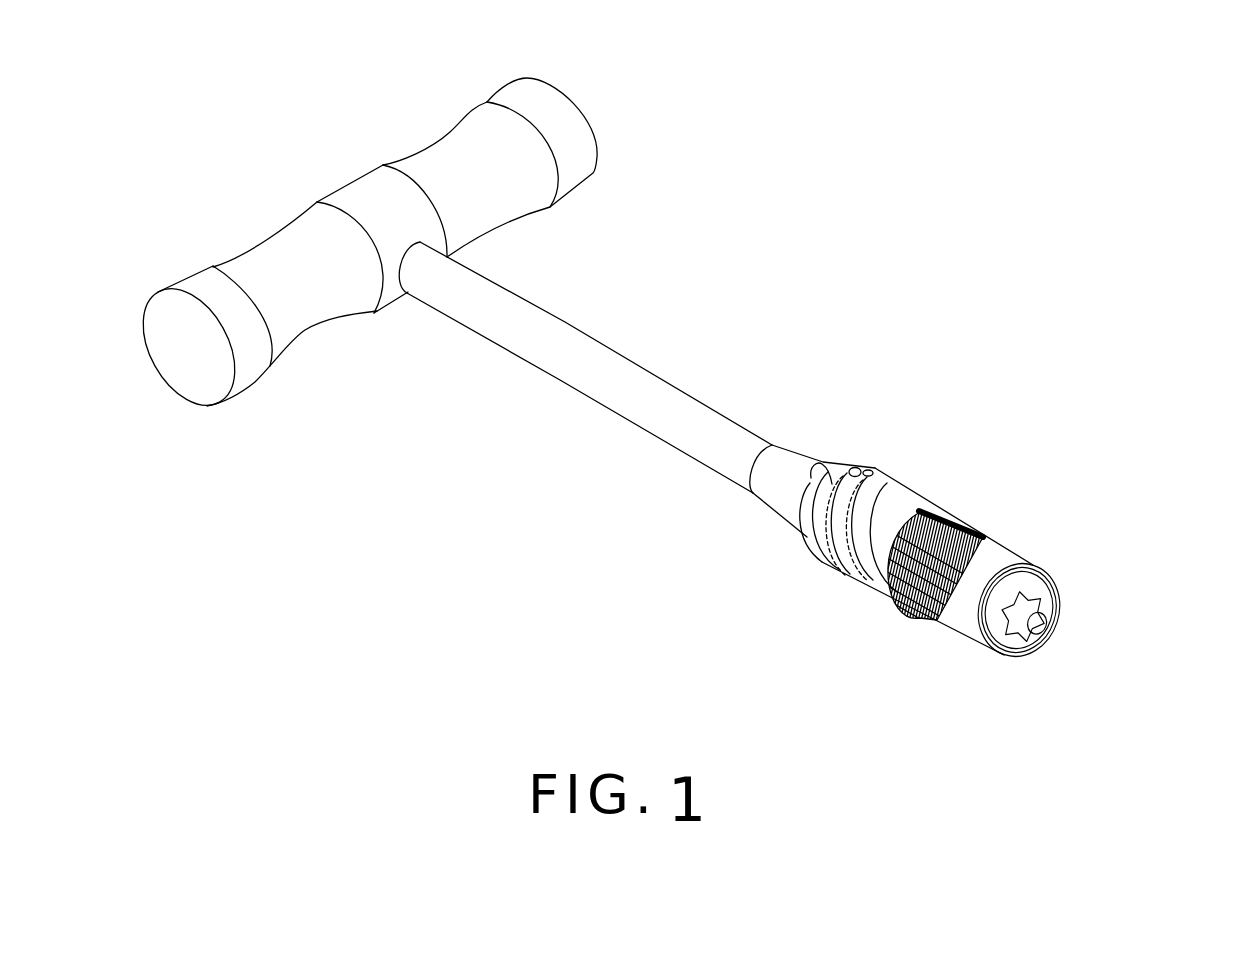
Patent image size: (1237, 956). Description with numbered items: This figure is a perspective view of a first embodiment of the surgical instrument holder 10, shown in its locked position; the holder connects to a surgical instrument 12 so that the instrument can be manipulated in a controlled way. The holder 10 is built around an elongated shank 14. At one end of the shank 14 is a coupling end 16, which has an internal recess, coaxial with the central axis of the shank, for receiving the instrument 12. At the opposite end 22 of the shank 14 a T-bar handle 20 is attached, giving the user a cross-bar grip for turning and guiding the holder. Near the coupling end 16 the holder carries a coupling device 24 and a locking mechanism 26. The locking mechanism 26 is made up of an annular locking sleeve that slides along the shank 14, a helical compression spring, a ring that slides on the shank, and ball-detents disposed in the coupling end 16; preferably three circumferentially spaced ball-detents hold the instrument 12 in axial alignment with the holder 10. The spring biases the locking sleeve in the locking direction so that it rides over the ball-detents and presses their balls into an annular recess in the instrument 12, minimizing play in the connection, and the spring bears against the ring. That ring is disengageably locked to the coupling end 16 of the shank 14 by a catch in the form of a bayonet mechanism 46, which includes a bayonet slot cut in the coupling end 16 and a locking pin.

The surgical instrument holder 10 is at (738, 288).
The surgical instrument 12 is at (1050, 590).
The shank 14 is at (583, 307).
The coupling end 16 is at (790, 542).
The T-bar handle 20 is at (552, 83).
The opposite end 22 is at (415, 298).
The coupling device 24 is at (952, 472).
The locking mechanism 26 is at (892, 604).
The bayonet mechanism 46 is at (871, 468).